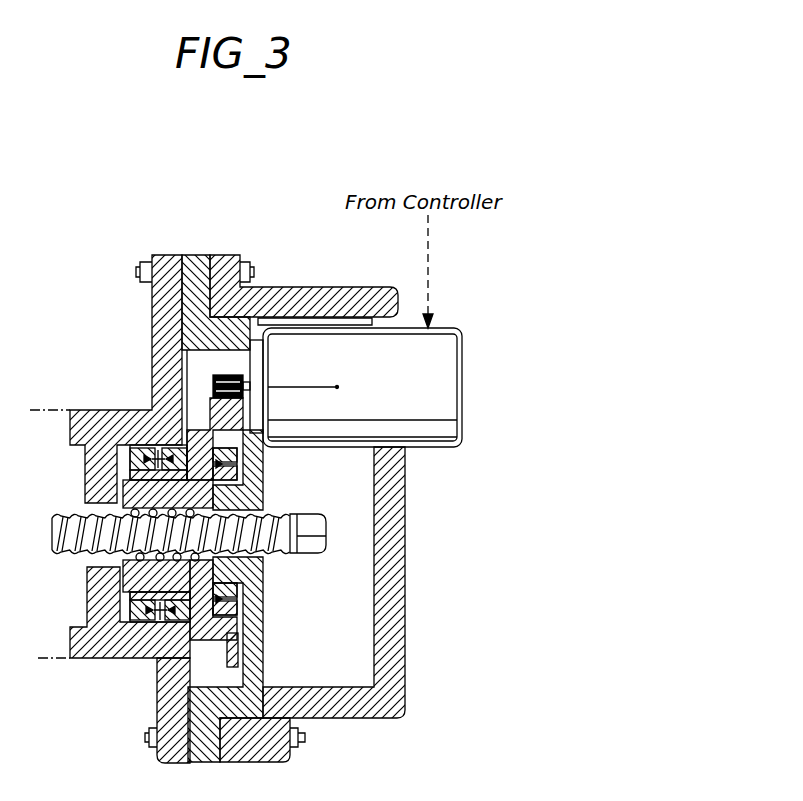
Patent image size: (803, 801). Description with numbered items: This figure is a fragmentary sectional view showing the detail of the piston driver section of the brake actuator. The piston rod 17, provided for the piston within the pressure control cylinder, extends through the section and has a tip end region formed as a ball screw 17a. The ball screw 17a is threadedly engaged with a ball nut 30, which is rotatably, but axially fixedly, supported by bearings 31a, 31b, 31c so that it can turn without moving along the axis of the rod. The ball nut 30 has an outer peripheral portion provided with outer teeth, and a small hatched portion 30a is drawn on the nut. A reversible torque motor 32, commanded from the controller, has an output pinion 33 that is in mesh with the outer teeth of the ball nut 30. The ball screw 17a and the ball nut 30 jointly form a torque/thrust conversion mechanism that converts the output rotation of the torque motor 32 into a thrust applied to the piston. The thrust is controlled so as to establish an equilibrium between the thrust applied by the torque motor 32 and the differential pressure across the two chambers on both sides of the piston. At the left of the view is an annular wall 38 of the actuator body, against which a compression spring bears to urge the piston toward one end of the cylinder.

The piston rod 17 is at (83, 556).
The ball screw 17a is at (267, 550).
The ball nut 30 is at (260, 647).
The hub flange 30a is at (236, 673).
The bearing 31a is at (243, 592).
The bearing 31b is at (143, 658).
The bearing 31c is at (97, 658).
The reversible torque motor 32 is at (333, 430).
The output pinion 33 is at (213, 376).
The annular wall 38 is at (100, 478).